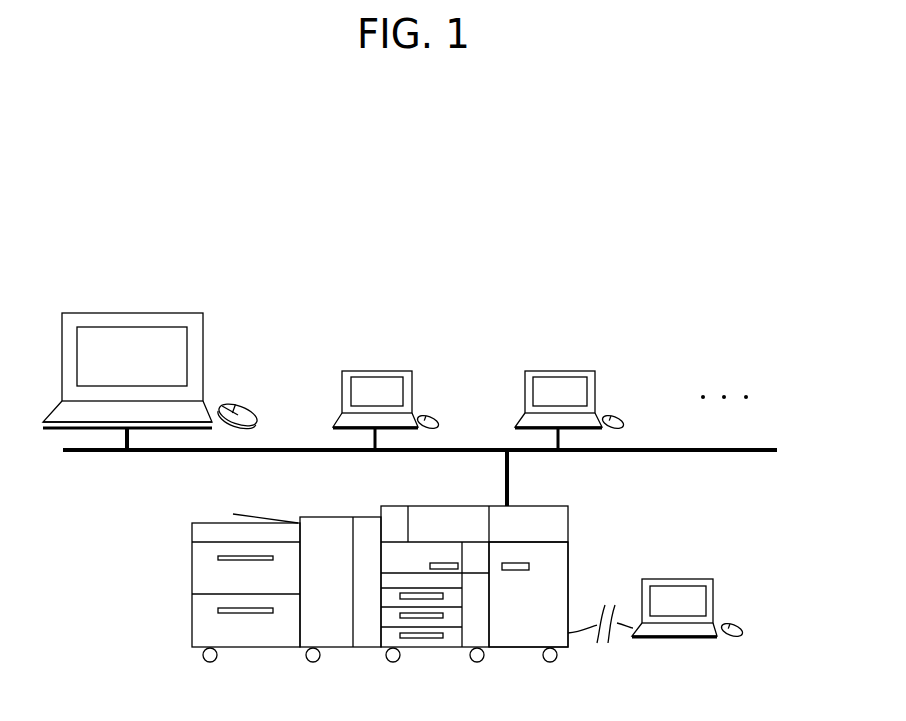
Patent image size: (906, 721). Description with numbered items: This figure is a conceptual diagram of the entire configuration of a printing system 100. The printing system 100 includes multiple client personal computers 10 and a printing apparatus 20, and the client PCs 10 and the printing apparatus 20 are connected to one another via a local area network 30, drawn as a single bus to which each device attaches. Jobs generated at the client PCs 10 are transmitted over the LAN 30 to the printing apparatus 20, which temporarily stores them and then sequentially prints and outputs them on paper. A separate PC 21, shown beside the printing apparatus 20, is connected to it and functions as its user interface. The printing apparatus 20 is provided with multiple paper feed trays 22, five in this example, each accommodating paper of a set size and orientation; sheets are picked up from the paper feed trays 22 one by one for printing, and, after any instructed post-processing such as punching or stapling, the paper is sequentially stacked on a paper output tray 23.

The printing system 100 is at (568, 251).
The client personal computer 10 is at (185, 304).
The printing apparatus 20 is at (207, 513).
The PC 21 is at (677, 554).
The paper feed tray 22 is at (205, 627).
The paper output tray 23 is at (547, 588).
The local area network 30 is at (678, 450).